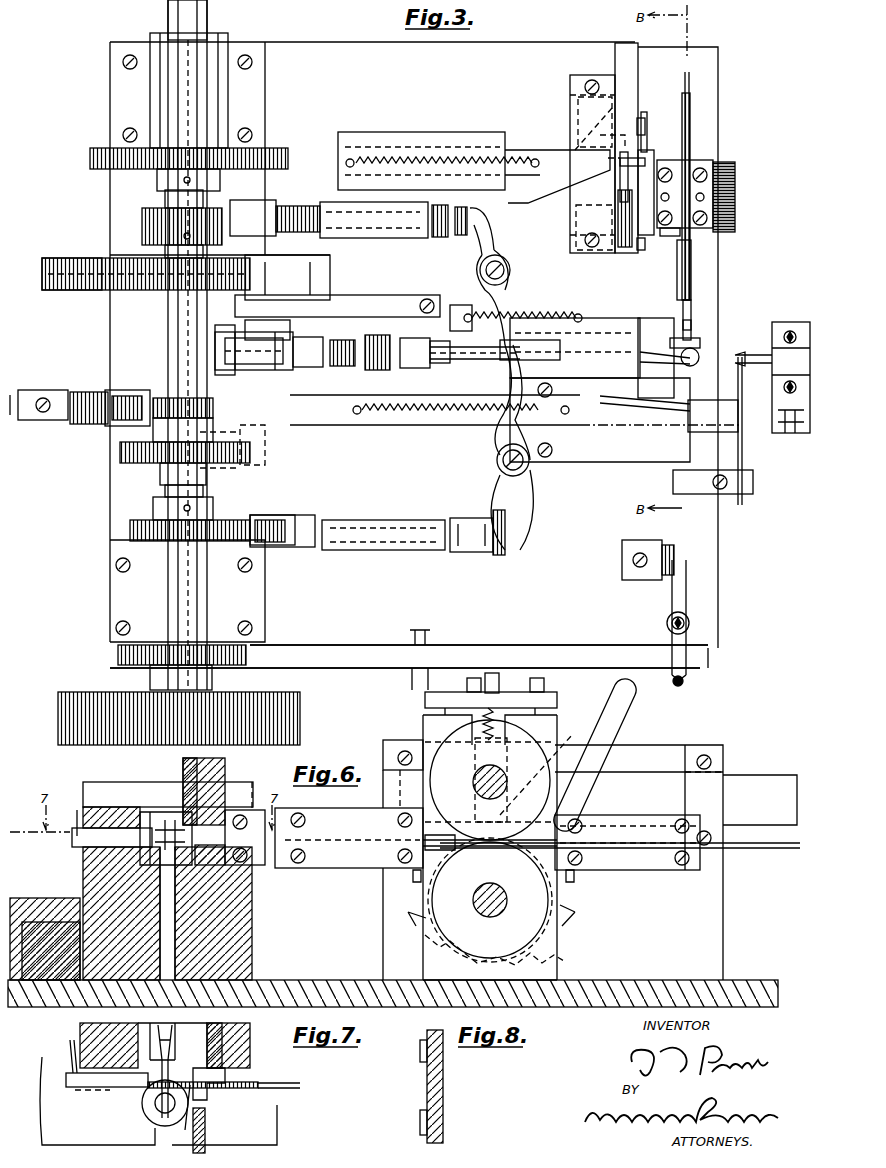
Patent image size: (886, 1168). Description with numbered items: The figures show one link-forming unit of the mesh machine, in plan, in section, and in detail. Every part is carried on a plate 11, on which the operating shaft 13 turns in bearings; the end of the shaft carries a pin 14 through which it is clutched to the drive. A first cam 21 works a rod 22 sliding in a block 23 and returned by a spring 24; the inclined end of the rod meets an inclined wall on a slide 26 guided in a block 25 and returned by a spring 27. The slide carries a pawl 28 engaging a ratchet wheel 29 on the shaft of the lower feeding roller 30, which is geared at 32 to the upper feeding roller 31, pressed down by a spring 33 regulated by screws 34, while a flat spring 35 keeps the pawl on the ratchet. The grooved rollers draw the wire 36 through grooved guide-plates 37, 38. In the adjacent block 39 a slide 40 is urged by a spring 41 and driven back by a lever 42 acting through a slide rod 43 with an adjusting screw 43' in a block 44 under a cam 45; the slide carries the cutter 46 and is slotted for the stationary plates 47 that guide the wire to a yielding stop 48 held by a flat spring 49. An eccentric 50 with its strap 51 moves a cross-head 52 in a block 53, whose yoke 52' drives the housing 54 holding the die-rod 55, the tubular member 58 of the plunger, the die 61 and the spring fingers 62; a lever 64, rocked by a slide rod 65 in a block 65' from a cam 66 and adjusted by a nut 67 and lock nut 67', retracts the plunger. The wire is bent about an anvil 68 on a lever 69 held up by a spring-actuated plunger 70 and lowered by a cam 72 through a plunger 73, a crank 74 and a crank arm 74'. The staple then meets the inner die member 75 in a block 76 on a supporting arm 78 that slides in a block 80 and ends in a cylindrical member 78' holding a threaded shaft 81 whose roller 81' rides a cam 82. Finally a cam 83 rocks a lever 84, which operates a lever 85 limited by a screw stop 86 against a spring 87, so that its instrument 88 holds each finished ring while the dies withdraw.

In FIG. 3, the plate 11 is at (414, 355).
In FIG. 6, the plate 11 is at (333, 980).
In FIG. 7, the plate 11 is at (270, 1132).
In FIG. 3, the operating shaft 13 is at (207, 20).
In FIG. 3, the pin 14 is at (222, 38).
In FIG. 3, the cam 21 is at (135, 160).
In FIG. 3, the rod 22 is at (532, 155).
In FIG. 3, the block 23 is at (425, 135).
In FIG. 3, the spring 24 is at (393, 160).
In FIG. 3, the block 25 is at (593, 123).
In FIG. 3, the slide 26 is at (615, 60).
In FIG. 6, the slide 26 is at (676, 862).
In FIG. 3, the spring 27 is at (615, 200).
In FIG. 3, the pawl 28 is at (648, 152).
In FIG. 6, the pawl 28 is at (585, 745).
In FIG. 3, the ratchet wheel 29 is at (648, 232).
In FIG. 6, the ratchet wheel 29 is at (560, 950).
In FIG. 6, the feeding roller 30 is at (490, 898).
In FIG. 3, the feeding roller 31 is at (700, 165).
In FIG. 6, the feeding roller 31 is at (490, 847).
In FIG. 3, the gearing 32 is at (737, 200).
In FIG. 6, the spring 33 is at (480, 720).
In FIG. 3, the screws 34 is at (705, 230).
In FIG. 6, the screws 34 is at (450, 704).
In FIG. 3, the flat spring 35 is at (630, 168).
In FIG. 6, the flat spring 35 is at (498, 778).
In FIG. 3, the wire 36 is at (690, 82).
In FIG. 6, the wire 36 is at (752, 850).
In FIG. 7, the wire 36 is at (292, 1090).
In FIG. 8, the wire 36 is at (427, 1088).
In FIG. 3, the guide-plates 37 is at (690, 125).
In FIG. 6, the guide-plates 37 is at (650, 870).
In FIG. 3, the guide-plates 38 is at (692, 275).
In FIG. 6, the guide-plates 38 is at (338, 870).
In FIG. 8, the guide-plates 38 is at (445, 1092).
In FIG. 3, the block 39 is at (600, 318).
In FIG. 6, the block 39 is at (252, 920).
In FIG. 7, the block 39 is at (80, 1025).
In FIG. 3, the slide 40 is at (650, 318).
In FIG. 6, the slide 40 is at (228, 776).
In FIG. 7, the slide 40 is at (207, 1045).
In FIG. 3, the spring 41 is at (540, 310).
In FIG. 3, the lever 42 is at (515, 292).
In FIG. 3, the slide rod 43 is at (283, 227).
In FIG. 3, the adjusting screw 43' is at (459, 249).
In FIG. 3, the block 44 is at (375, 240).
In FIG. 3, the cam 45 is at (148, 222).
In FIG. 3, the cutter 46 is at (692, 338).
In FIG. 6, the cutter 46 is at (183, 770).
In FIG. 7, the cutter 46 is at (205, 1125).
In FIG. 3, the plates 47 is at (700, 300).
In FIG. 6, the plates 47 is at (262, 870).
In FIG. 7, the plates 47 is at (247, 1092).
In FIG. 3, the yielding stop 48 is at (645, 405).
In FIG. 6, the yielding stop 48 is at (72, 842).
In FIG. 7, the yielding stop 48 is at (95, 1088).
In FIG. 3, the flat spring 49 is at (660, 433).
In FIG. 6, the flat spring 49 is at (77, 820).
In FIG. 7, the flat spring 49 is at (70, 1055).
In FIG. 3, the eccentric 50 is at (100, 292).
In FIG. 3, the strap 51 is at (100, 272).
In FIG. 3, the cross-head 52 is at (312, 277).
In FIG. 3, the yoke 52' is at (284, 384).
In FIG. 3, the block 53 is at (337, 306).
In FIG. 3, the housing 54 is at (254, 351).
In FIG. 3, the die-rod 55 is at (685, 328).
In FIG. 3, the tubular member 58 is at (462, 366).
In FIG. 3, the die 61 is at (655, 366).
In FIG. 6, the die 61 is at (166, 825).
In FIG. 7, the die 61 is at (174, 1030).
In FIG. 6, the spring fingers 62 is at (158, 825).
In FIG. 7, the spring fingers 62 is at (152, 1028).
In FIG. 3, the lever 64 is at (505, 492).
In FIG. 3, the slide rod 65 is at (285, 549).
In FIG. 3, the block 65' is at (383, 552).
In FIG. 3, the cam 66 is at (212, 530).
In FIG. 3, the nut 67 is at (517, 545).
In FIG. 3, the lock nut 67' is at (471, 551).
In FIG. 3, the anvil 68 is at (700, 365).
In FIG. 7, the anvil 68 is at (155, 1104).
In FIG. 3, the lever 69 is at (352, 366).
In FIG. 7, the spring-actuated plunger 70 is at (152, 1120).
In FIG. 3, the cam 72 is at (135, 465).
In FIG. 3, the plunger 73 is at (153, 505).
In FIG. 3, the crank 74 is at (243, 456).
In FIG. 3, the crank arm 74' is at (224, 342).
In FIG. 3, the inner die member 75 is at (748, 360).
In FIG. 3, the block 76 is at (805, 325).
In FIG. 3, the supporting arm 78 is at (713, 416).
In FIG. 6, the supporting arm 78 is at (51, 921).
In FIG. 3, the cylindrical member 78' is at (39, 389).
In FIG. 3, the block 80 is at (600, 420).
In FIG. 6, the block 80 is at (25, 898).
In FIG. 3, the threaded shaft 81 is at (88, 384).
In FIG. 3, the roller 81' is at (127, 384).
In FIG. 3, the cam 82 is at (160, 400).
In FIG. 3, the cam 83 is at (118, 652).
In FIG. 3, the lever 84 is at (485, 660).
In FIG. 3, the lever 85 is at (688, 635).
In FIG. 3, the screw stop 86 is at (667, 620).
In FIG. 3, the spring 87 is at (683, 684).
In FIG. 3, the instrument 88 is at (745, 470).